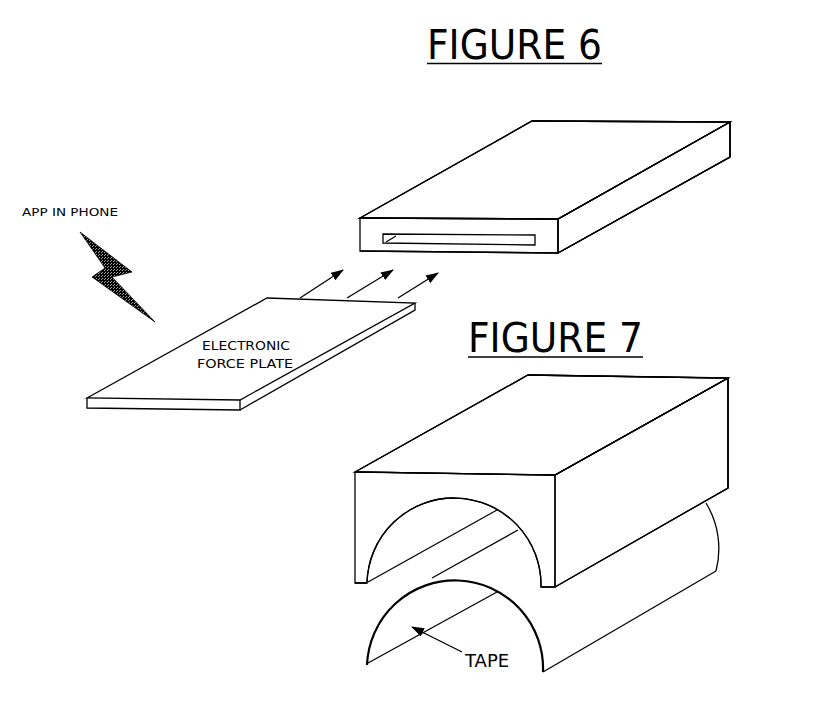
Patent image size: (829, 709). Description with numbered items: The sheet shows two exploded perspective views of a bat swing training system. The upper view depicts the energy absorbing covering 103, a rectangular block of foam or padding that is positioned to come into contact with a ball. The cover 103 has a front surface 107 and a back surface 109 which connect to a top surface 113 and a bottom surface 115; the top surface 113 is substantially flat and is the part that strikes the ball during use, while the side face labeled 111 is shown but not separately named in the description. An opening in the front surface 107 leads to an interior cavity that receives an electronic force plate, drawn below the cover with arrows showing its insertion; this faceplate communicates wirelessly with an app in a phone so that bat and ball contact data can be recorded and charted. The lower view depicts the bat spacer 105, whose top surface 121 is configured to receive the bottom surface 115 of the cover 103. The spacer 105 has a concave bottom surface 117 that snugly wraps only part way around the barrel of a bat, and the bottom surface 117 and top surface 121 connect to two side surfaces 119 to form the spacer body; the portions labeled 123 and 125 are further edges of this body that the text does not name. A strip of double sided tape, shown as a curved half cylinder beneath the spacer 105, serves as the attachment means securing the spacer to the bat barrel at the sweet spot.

In FIG. 6, the energy absorbing covering 103 is at (545, 187).
In FIG. 6, the front surface 107 is at (377, 230).
In FIG. 6, the back surface 109 is at (745, 122).
In FIG. 6, the side wall 111 is at (607, 210).
In FIG. 6, the top surface 113 is at (462, 193).
In FIG. 6, the bottom surface 115 is at (540, 262).
In FIG. 7, the bat spacer 105 is at (541, 481).
In FIG. 7, the concave bottom surface 117 is at (430, 522).
In FIG. 7, the side surfaces 119 is at (695, 455).
In FIG. 7, the top surface 121 is at (440, 452).
In FIG. 7, the corner edge 123 is at (745, 380).
In FIG. 7, the front wall 125 is at (380, 505).